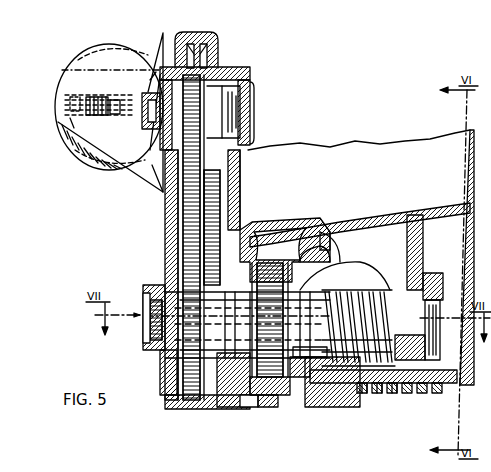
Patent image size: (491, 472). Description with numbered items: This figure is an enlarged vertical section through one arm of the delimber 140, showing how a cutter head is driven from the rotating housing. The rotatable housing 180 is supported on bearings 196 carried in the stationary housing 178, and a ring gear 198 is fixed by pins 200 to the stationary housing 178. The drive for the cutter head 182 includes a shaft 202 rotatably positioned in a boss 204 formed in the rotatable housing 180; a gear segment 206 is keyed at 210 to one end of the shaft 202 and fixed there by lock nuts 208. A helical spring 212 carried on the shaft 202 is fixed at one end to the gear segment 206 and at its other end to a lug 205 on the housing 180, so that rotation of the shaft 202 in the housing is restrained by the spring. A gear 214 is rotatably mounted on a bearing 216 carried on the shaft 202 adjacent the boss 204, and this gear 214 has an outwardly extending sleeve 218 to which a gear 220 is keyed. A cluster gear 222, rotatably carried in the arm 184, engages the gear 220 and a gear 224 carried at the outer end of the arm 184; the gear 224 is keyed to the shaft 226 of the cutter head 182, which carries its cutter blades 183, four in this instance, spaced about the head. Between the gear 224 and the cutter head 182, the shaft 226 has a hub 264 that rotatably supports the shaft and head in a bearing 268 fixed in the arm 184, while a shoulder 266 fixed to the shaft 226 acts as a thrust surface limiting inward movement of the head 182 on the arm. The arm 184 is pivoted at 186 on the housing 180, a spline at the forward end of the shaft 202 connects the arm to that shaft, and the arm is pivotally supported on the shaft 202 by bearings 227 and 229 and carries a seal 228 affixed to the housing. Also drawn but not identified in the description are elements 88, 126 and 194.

The teeth 88 is at (442, 392).
The electronic component 126 is at (126, 114).
The delimber 140 is at (332, 112).
The stationary housing 178 is at (372, 386).
The rotatable housing 180 is at (372, 136).
The cutter head 182 is at (54, 151).
The cutter blades 183 is at (126, 47).
The arm 184 is at (180, 230).
The pivot 186 is at (134, 292).
The cap 194 is at (216, 32).
The bearings 196 is at (336, 407).
The ring gear 198 is at (265, 404).
The pins 200 is at (292, 407).
The shaft 202 is at (440, 311).
The boss 204 is at (354, 262).
The lug 205 is at (344, 260).
The gear segment 206 is at (431, 272).
The lock nuts 208 is at (460, 380).
The key 210 is at (397, 393).
The helical spring 212 is at (363, 288).
The gear 214 is at (270, 312).
The bearing 216 is at (310, 256).
The sleeve 218 is at (220, 408).
The gear 220 is at (162, 373).
The cluster gear 222 is at (154, 253).
The gear 224 is at (222, 72).
The shaft 226 is at (252, 111).
The bearing 227 is at (147, 331).
The seal 228 is at (258, 231).
The bearing 229 is at (232, 386).
The hub 264 is at (138, 96).
The shoulder 266 is at (146, 90).
The bearing 268 is at (156, 185).